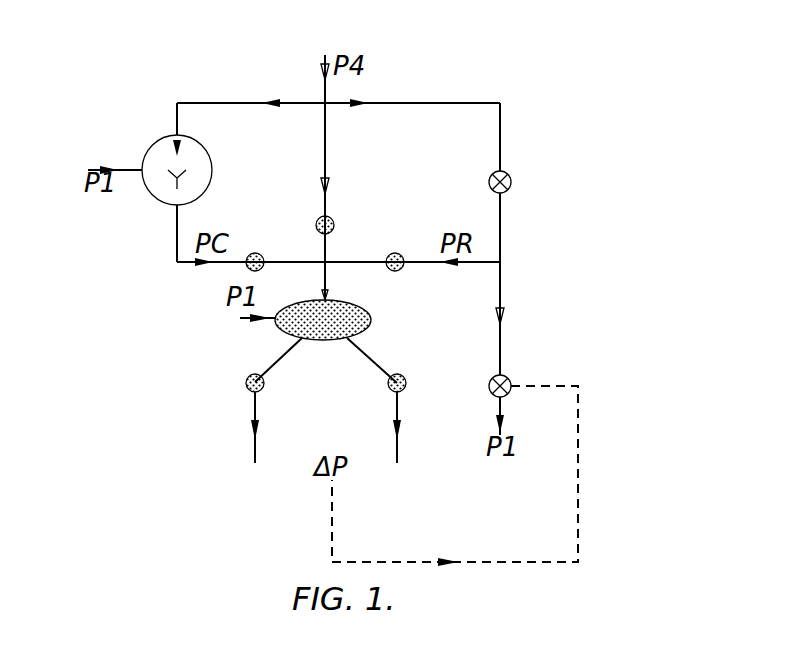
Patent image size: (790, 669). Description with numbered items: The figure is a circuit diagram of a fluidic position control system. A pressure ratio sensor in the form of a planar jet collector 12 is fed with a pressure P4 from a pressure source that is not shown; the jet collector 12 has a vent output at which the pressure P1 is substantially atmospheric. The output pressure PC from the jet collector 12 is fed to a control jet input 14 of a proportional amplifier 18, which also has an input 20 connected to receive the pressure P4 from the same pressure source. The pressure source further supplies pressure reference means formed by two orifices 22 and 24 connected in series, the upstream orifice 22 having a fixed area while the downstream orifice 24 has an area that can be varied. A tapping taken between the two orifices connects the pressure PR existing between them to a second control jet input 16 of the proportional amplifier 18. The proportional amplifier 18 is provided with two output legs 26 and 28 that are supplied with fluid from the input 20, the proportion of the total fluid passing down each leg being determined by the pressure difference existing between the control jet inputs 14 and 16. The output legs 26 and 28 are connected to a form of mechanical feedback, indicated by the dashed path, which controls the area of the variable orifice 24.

The planar jet collector 12 is at (146, 136).
The control jet input 14 is at (263, 249).
The second control jet input 16 is at (399, 270).
The proportional amplifier 18 is at (262, 342).
The input 20 is at (333, 222).
The upstream orifice 22 is at (512, 180).
The downstream orifice 24 is at (509, 377).
The output leg 26 is at (262, 389).
The output leg 28 is at (389, 388).